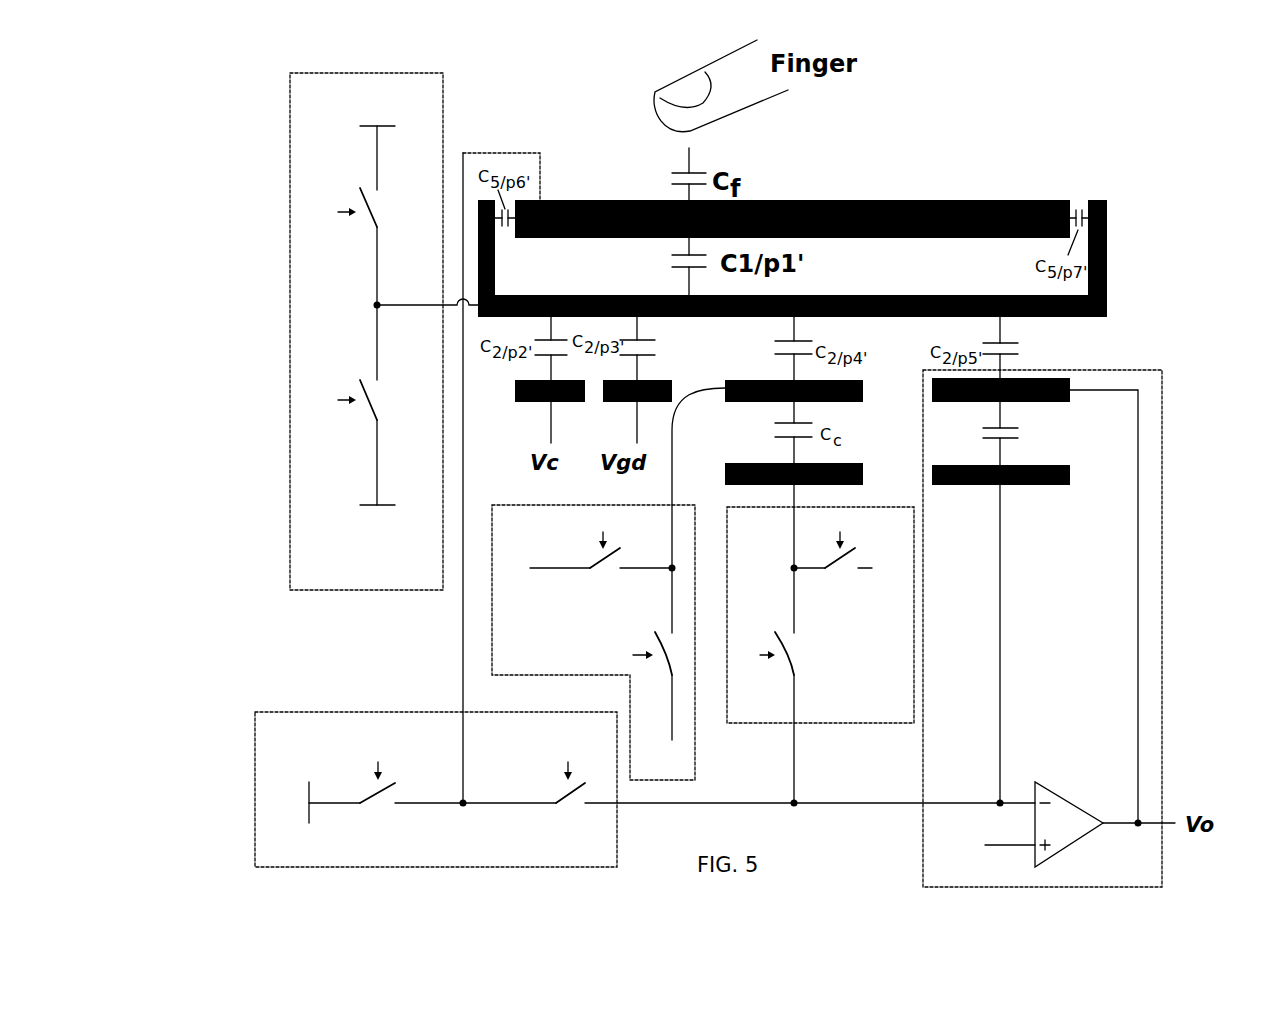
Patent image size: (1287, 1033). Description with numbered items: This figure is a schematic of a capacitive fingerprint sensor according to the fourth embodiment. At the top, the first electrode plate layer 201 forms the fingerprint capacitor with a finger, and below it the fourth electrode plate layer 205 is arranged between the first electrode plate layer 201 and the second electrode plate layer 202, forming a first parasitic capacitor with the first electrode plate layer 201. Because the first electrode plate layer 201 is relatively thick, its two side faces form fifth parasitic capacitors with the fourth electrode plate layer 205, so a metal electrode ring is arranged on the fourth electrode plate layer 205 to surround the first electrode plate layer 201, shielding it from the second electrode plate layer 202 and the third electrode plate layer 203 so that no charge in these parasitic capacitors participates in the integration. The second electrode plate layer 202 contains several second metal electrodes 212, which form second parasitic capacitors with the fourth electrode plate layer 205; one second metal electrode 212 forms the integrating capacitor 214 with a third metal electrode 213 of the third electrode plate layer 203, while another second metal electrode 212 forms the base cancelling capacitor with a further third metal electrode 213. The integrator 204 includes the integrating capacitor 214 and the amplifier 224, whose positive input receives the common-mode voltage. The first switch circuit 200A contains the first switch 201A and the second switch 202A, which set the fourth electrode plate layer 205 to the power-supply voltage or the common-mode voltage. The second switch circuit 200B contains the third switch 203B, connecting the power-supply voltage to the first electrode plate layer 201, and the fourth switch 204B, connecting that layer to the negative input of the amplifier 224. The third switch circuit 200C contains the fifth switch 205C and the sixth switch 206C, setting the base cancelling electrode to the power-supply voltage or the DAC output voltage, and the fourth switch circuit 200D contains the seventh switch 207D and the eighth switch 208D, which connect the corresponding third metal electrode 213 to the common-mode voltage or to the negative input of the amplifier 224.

The first switch circuit 200A is at (282, 208).
The first switch 201A is at (362, 192).
The second switch 202A is at (362, 382).
The first electrode plate layer 201 is at (1050, 192).
The fourth electrode plate layer 205 is at (1118, 292).
The second electrode plate layer 202 is at (1092, 366).
The second metal electrode 212 is at (628, 404).
The third metal electrode 213 is at (763, 463).
The integrating capacitor 214 is at (1023, 437).
The third electrode plate layer 203 is at (1080, 498).
The integrator 204 is at (1172, 576).
The fifth switch 205C is at (590, 566).
The sixth switch 206C is at (655, 635).
The seventh switch 207D is at (842, 570).
The eighth switch 208D is at (787, 664).
The second switch circuit 200B is at (250, 700).
The third switch 203B is at (363, 793).
The fourth switch 204B is at (560, 797).
The third switch circuit 200C is at (702, 712).
The fourth switch circuit 200D is at (845, 740).
The amplifier 224 is at (1072, 803).